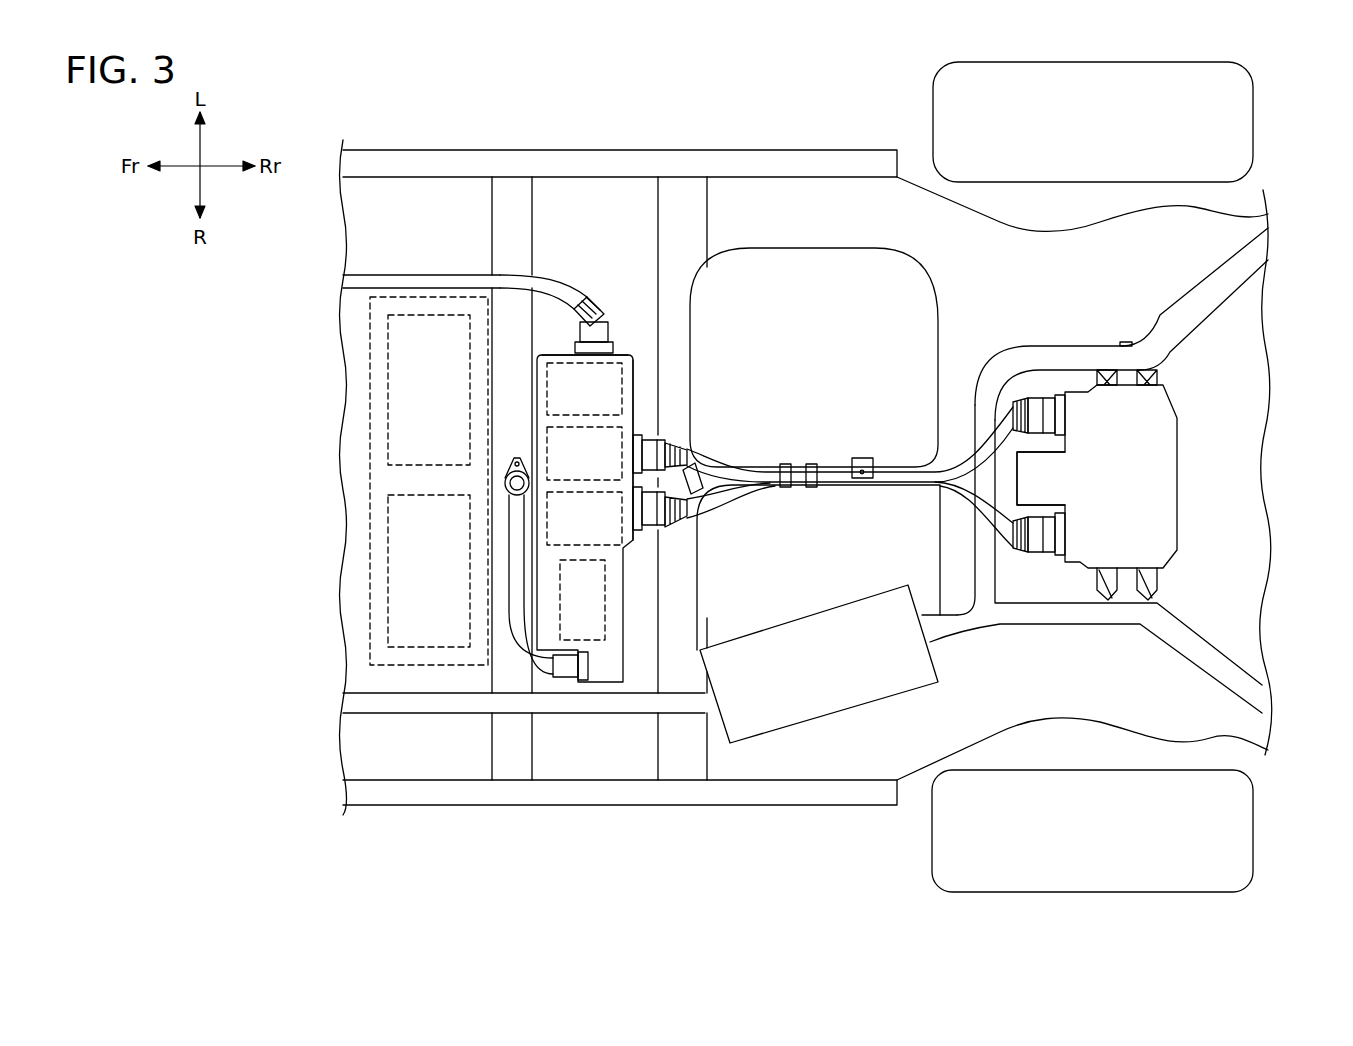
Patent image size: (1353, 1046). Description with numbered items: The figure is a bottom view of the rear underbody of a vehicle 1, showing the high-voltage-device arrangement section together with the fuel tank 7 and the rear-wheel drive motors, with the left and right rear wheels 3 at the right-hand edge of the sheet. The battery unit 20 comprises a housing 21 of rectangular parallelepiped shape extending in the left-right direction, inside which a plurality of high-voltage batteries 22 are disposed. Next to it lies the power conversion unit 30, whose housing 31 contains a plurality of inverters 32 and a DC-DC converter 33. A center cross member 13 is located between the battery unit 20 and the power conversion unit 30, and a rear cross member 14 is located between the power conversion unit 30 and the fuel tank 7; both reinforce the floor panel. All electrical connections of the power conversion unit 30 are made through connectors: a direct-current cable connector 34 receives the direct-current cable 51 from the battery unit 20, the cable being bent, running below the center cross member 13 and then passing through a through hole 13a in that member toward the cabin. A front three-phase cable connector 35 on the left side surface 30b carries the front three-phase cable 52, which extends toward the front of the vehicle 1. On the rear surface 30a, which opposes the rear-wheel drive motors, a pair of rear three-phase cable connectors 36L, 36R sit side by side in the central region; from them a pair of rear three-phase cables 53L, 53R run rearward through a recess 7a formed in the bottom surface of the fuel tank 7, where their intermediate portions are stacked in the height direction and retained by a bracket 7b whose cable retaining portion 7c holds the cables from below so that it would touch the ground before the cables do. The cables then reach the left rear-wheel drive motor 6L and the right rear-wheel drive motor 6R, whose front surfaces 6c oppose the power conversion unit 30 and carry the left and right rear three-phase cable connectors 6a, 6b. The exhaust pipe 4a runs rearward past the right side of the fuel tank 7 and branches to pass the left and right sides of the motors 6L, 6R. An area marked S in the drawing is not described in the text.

The vehicle 1 is at (473, 115).
The rear wheel 3 is at (933, 98).
The exhaust pipe 4a is at (586, 705).
The left rear-wheel drive motor 6L is at (1178, 432).
The right rear-wheel drive motor 6R is at (1178, 507).
The left rear three-phase cable connector 6a is at (1052, 418).
The right rear three-phase cable connector 6b is at (1052, 536).
The front surface 6c is at (1052, 457).
The fuel tank 7 is at (810, 248).
The recess 7a is at (770, 483).
The bracket 7b is at (860, 458).
The cable retaining portion 7c is at (862, 472).
The center cross member 13 is at (510, 752).
The through hole 13a is at (513, 487).
The rear cross member 14 is at (683, 752).
The battery unit 20 is at (373, 481).
The housing 21 is at (370, 358).
The high-voltage battery 22 is at (388, 443).
The power conversion unit 30 is at (483, 478).
The rear surface 30a is at (637, 390).
The left side surface 30b is at (553, 292).
The housing 31 is at (625, 344).
The inverter 32 is at (547, 386).
The DC-DC converter 33 is at (560, 585).
The direct-current cable connector 34 is at (577, 668).
The front three-phase cable connector 35 is at (583, 316).
The left rear three-phase cable connector 36L is at (677, 440).
The right rear three-phase cable connector 36R is at (667, 517).
The direct-current cable 51 is at (512, 614).
The front three-phase cable 52 is at (388, 275).
The left rear three-phase cable 53L is at (957, 466).
The right rear three-phase cable 53R is at (953, 493).
The space S is at (411, 678).